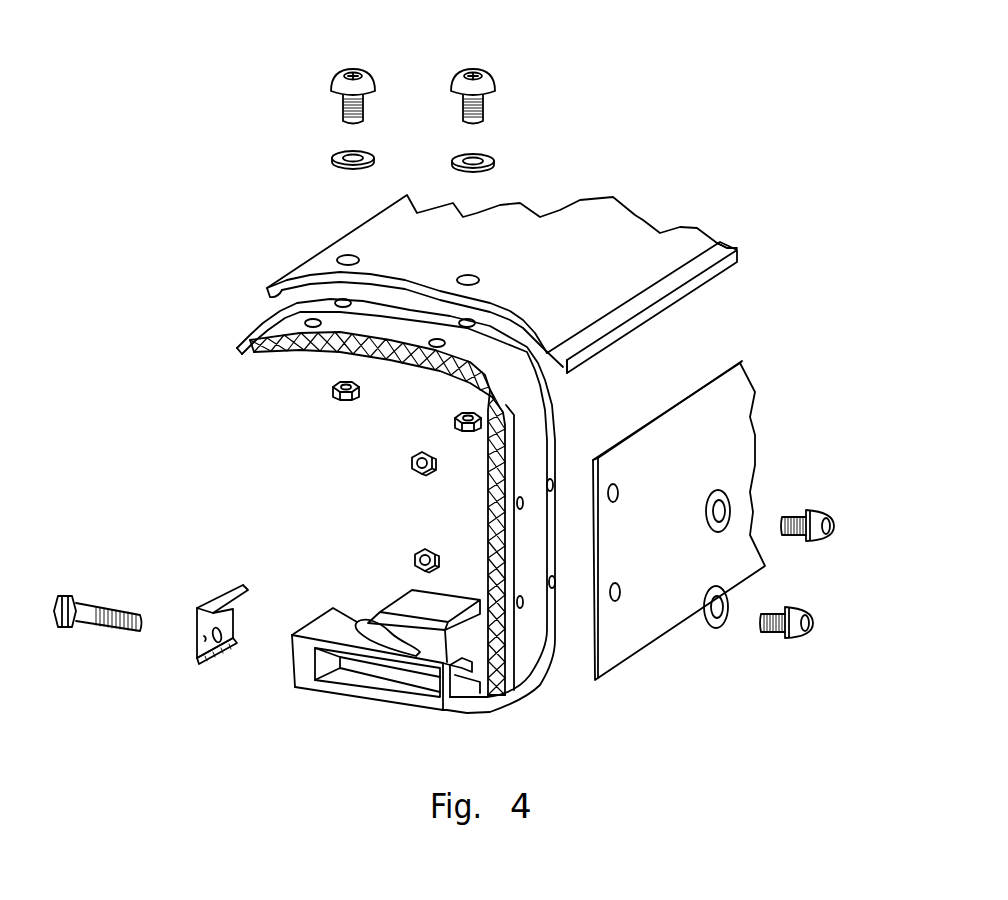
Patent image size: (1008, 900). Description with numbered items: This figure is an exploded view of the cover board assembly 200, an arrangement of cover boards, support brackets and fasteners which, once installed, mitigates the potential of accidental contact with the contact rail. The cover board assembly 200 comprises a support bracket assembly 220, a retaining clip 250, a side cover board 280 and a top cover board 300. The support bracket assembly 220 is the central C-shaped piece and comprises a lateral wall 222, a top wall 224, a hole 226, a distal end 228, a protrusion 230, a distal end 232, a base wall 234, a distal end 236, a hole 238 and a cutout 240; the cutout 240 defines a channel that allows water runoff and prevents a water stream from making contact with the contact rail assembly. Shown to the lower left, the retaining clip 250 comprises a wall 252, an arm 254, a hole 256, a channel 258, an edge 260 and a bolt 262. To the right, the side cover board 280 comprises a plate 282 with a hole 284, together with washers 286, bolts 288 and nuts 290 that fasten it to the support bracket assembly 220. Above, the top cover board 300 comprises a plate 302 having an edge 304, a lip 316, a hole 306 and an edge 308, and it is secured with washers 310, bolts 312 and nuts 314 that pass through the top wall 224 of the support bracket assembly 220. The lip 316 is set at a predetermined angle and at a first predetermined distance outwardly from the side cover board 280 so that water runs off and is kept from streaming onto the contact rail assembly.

The cover board assembly 200 is at (765, 268).
The support bracket assembly 220 is at (557, 404).
The lateral wall 222 is at (553, 445).
The top wall 224 is at (310, 357).
The hole 226 is at (283, 344).
The distal end 228 is at (237, 348).
The protrusion 230 is at (412, 605).
The distal end 232 is at (380, 607).
The base wall 234 is at (353, 700).
The distal end 236 is at (292, 666).
The hole 238 is at (494, 516).
The cutout 240 is at (473, 662).
The retaining clip 250 is at (210, 595).
The wall 252 is at (203, 637).
The arm 254 is at (240, 586).
The hole 256 is at (232, 650).
The channel 258 is at (199, 658).
The edge 260 is at (199, 665).
The bolt 262 is at (72, 598).
The side cover board 280 is at (697, 387).
The plate 282 is at (727, 433).
The hole 284 is at (620, 488).
The washers 286 is at (730, 496).
The bolts 288 is at (782, 600).
The nuts 290 is at (419, 553).
The top cover board 300 is at (645, 222).
The plate 302 is at (543, 230).
The edge 304 is at (717, 248).
The hole 306 is at (462, 278).
The edge 308 is at (272, 295).
The washers 310 is at (333, 157).
The bolts 312 is at (333, 80).
The nuts 314 is at (462, 425).
The lip 316 is at (693, 293).